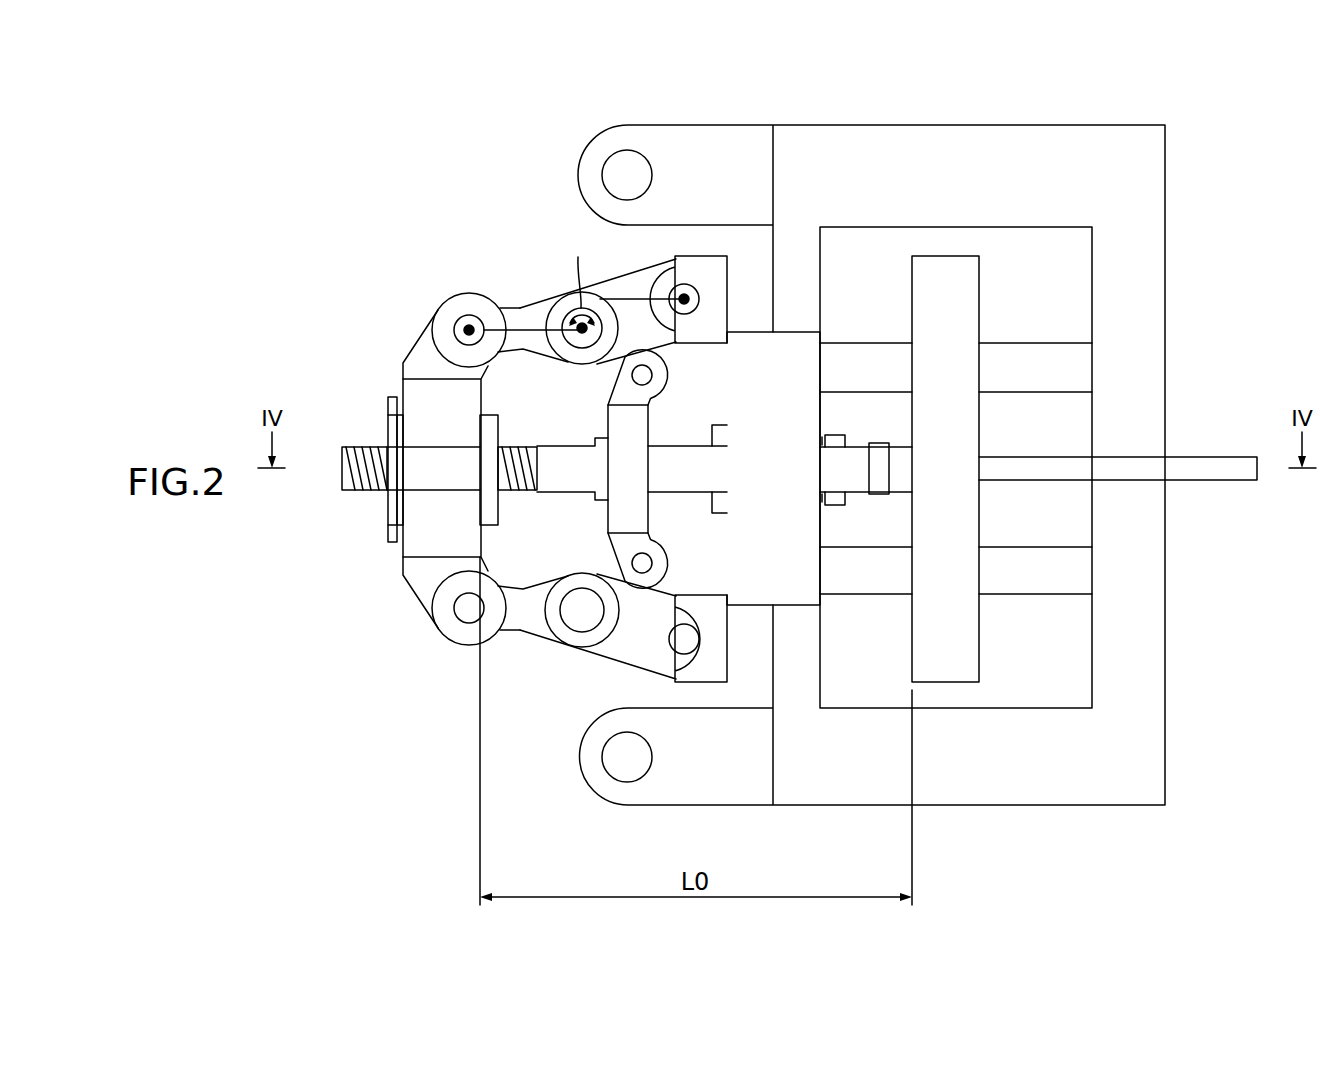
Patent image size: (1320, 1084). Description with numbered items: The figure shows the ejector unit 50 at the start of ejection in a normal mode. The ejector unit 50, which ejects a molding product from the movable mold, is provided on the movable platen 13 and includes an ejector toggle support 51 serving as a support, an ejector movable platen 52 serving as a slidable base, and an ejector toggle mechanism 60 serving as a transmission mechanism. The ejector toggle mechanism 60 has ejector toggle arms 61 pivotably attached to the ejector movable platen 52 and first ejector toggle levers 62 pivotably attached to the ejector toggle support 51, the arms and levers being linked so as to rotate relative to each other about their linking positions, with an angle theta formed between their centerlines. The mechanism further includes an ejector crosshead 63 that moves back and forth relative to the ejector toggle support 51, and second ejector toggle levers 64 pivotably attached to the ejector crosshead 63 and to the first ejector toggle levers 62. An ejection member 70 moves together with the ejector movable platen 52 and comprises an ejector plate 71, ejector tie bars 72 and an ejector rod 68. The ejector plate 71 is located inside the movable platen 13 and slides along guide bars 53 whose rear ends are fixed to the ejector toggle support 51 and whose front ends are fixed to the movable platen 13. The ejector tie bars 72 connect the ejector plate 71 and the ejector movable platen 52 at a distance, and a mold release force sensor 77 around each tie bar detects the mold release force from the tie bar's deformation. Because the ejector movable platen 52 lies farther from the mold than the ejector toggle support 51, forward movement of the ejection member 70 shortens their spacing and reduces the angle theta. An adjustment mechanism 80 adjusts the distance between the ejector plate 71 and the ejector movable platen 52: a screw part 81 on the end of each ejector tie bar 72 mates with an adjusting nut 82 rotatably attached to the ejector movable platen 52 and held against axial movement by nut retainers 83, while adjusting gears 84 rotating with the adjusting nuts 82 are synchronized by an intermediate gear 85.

The movable platen 13 is at (958, 143).
The ejector unit 50 is at (409, 428).
The ejector toggle support 51 is at (797, 337).
The ejector movable platen 52 is at (413, 390).
The guide bars 53 is at (1034, 358).
The ejector toggle mechanism 60 is at (579, 450).
The ejector toggle arms 61 is at (532, 322).
The first ejector toggle levers 62 is at (627, 288).
The ejector crosshead 63 is at (617, 517).
The second ejector toggle levers 64 is at (617, 372).
The ejector rod 68 is at (1035, 465).
The ejection member 70 is at (1038, 467).
The ejector plate 71 is at (920, 518).
The ejector tie bars 72 is at (860, 455).
The mold release force sensor 77 is at (878, 456).
The adjustment mechanism 80 is at (413, 497).
The screw part 81 is at (357, 467).
The adjusting nut 82 is at (397, 493).
The nut retainers 83 is at (487, 427).
The adjusting gears 84 is at (388, 428).
The intermediate gear 85 is at (388, 403).